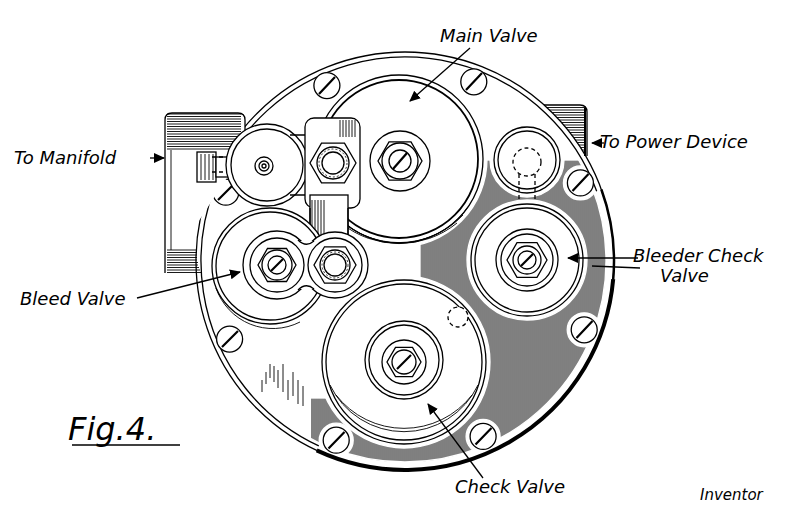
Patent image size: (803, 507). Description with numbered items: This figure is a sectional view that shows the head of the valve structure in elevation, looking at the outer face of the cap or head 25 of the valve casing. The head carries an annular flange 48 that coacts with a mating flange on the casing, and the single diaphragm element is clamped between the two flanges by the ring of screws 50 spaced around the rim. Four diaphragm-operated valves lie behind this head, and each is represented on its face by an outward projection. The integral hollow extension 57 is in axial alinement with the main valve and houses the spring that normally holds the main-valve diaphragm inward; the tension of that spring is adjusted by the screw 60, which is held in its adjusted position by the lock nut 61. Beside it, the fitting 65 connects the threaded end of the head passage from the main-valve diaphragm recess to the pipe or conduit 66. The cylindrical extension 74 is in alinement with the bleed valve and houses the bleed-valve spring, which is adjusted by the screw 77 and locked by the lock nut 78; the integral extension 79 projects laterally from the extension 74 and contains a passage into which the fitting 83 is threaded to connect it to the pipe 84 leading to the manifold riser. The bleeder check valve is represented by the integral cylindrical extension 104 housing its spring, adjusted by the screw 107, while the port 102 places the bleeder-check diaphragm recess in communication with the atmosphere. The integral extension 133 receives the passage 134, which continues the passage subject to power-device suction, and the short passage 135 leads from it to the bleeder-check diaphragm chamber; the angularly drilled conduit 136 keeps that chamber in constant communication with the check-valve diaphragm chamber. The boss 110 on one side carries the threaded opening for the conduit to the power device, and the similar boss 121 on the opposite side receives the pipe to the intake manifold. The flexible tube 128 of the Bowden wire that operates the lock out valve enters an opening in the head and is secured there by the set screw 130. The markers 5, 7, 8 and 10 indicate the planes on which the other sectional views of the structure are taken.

The section line 5- 5 is at (416, 493).
The section line 7- 7 is at (608, 172).
The section line 8- 8 is at (525, 60).
The section line 10- 10 is at (152, 268).
The cap or head 25 is at (257, 412).
The annular flange 48 is at (582, 381).
The screws 50 is at (600, 334).
The hollow extension 57 is at (420, 139).
The screw 60 is at (399, 159).
The lock nut 61 is at (419, 154).
The fitting 65 is at (361, 142).
The pipe or conduit 66 is at (354, 190).
The cylindrical extension 74 is at (248, 290).
The screw 77 is at (278, 256).
The lock nut 78 is at (263, 260).
The integral extension 79 is at (333, 299).
The fitting 83 is at (354, 256).
The pipe 84 is at (356, 268).
The port 102 is at (521, 262).
The cylindrical extension 104 is at (505, 250).
The screw 107 is at (398, 353).
The boss 110 is at (586, 106).
The boss 121 is at (196, 106).
The flexible tube 128 is at (268, 163).
The set screw 130 is at (206, 181).
The integral extension 133 is at (506, 133).
The passage 134 is at (533, 148).
The short passage 135 is at (527, 260).
The conduit 136 is at (452, 307).